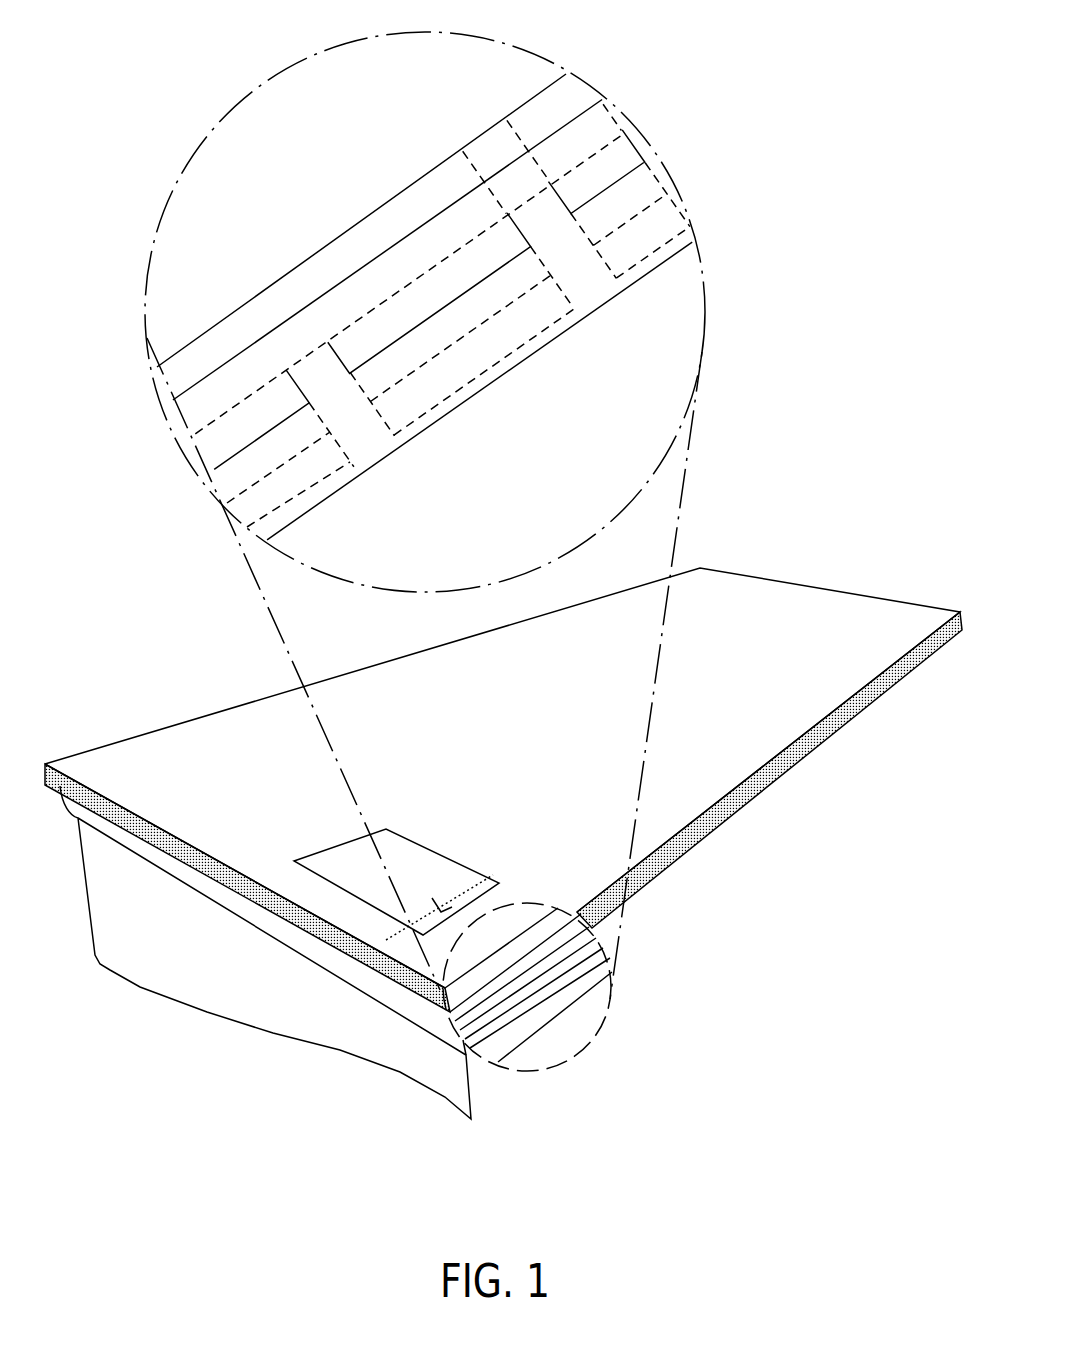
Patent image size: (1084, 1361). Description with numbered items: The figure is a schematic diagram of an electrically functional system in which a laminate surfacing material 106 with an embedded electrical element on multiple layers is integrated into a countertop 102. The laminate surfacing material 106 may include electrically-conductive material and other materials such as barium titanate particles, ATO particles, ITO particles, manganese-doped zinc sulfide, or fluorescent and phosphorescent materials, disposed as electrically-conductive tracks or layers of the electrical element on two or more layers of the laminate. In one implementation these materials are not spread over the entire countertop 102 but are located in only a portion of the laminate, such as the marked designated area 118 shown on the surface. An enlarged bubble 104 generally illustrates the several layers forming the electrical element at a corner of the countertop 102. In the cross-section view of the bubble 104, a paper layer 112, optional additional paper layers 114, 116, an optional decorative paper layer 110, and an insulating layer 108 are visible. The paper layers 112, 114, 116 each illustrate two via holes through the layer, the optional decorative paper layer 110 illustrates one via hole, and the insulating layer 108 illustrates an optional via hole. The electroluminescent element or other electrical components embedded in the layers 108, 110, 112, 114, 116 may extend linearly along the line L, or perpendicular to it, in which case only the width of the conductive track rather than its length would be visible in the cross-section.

The countertop 102 is at (194, 728).
The bubble 104 is at (573, 1057).
The laminate surfacing material 106 is at (342, 235).
The insulating layer 108 is at (171, 382).
The optional decorative paper layer 110 is at (197, 413).
The paper layer 112 is at (215, 452).
The optional additional paper layer 114 is at (225, 497).
The optional additional paper layer 116 is at (245, 527).
The marked designated area 118 is at (327, 861).